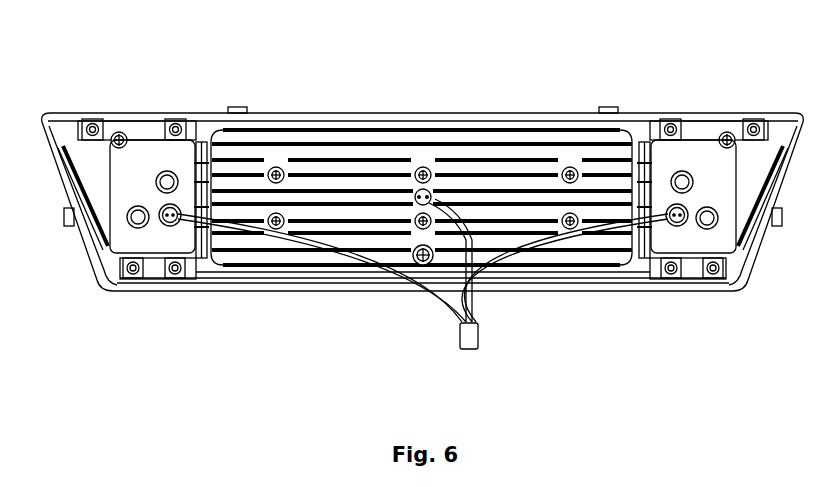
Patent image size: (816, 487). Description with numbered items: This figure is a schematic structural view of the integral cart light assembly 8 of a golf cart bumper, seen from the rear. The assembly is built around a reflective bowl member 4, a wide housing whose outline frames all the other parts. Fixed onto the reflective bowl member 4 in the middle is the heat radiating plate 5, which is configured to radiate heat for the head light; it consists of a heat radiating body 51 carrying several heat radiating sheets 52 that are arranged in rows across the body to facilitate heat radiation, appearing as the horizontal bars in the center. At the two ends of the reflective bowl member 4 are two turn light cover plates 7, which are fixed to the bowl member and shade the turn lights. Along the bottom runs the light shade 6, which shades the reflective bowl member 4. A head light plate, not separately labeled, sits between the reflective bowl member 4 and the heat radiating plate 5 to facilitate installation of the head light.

The reflective bowl member 4 is at (485, 112).
The heat radiating plate 5 is at (421, 154).
The heat radiating body 51 is at (355, 150).
The heat radiating sheets 52 is at (405, 145).
The light shade 6 is at (583, 291).
The turn light cover plates 7 is at (682, 157).
The integral cart light assembly 8 is at (191, 85).